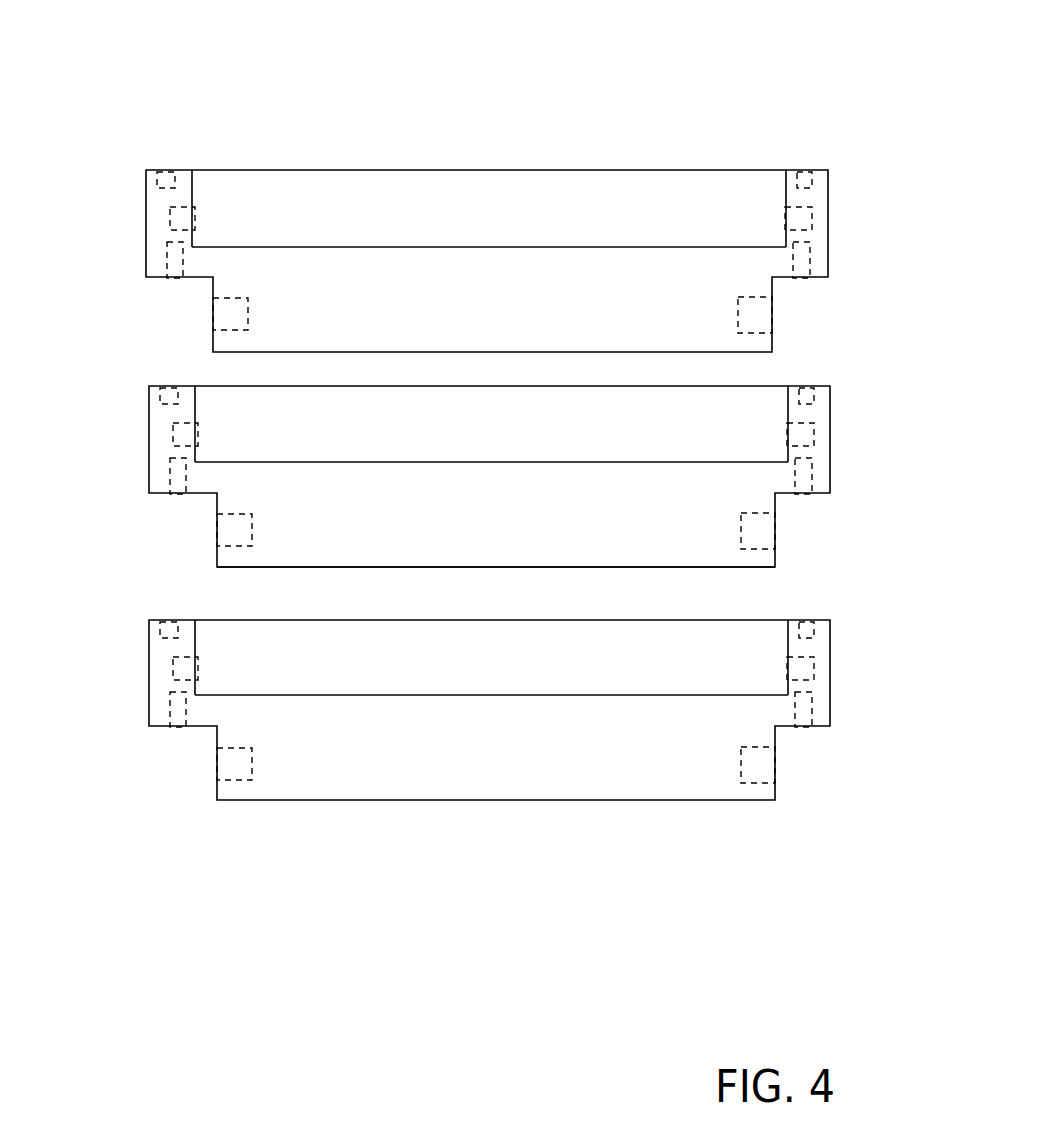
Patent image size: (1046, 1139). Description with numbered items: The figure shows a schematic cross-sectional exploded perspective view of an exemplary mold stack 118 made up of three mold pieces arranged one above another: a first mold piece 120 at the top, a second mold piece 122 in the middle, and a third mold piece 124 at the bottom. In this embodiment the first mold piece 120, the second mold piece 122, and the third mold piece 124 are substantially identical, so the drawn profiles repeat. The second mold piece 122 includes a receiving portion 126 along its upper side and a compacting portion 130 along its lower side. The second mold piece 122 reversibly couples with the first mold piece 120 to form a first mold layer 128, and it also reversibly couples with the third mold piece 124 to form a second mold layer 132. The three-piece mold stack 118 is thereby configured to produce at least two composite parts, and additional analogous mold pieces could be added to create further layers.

The mold stack 118 is at (791, 75).
The first mold piece 120 is at (829, 232).
The second mold piece 122 is at (830, 451).
The third mold piece 124 is at (830, 671).
The receiving portion 126 is at (420, 466).
The first mold layer 128 is at (121, 172).
The compacting portion 130 is at (469, 568).
The second mold layer 132 is at (892, 390).